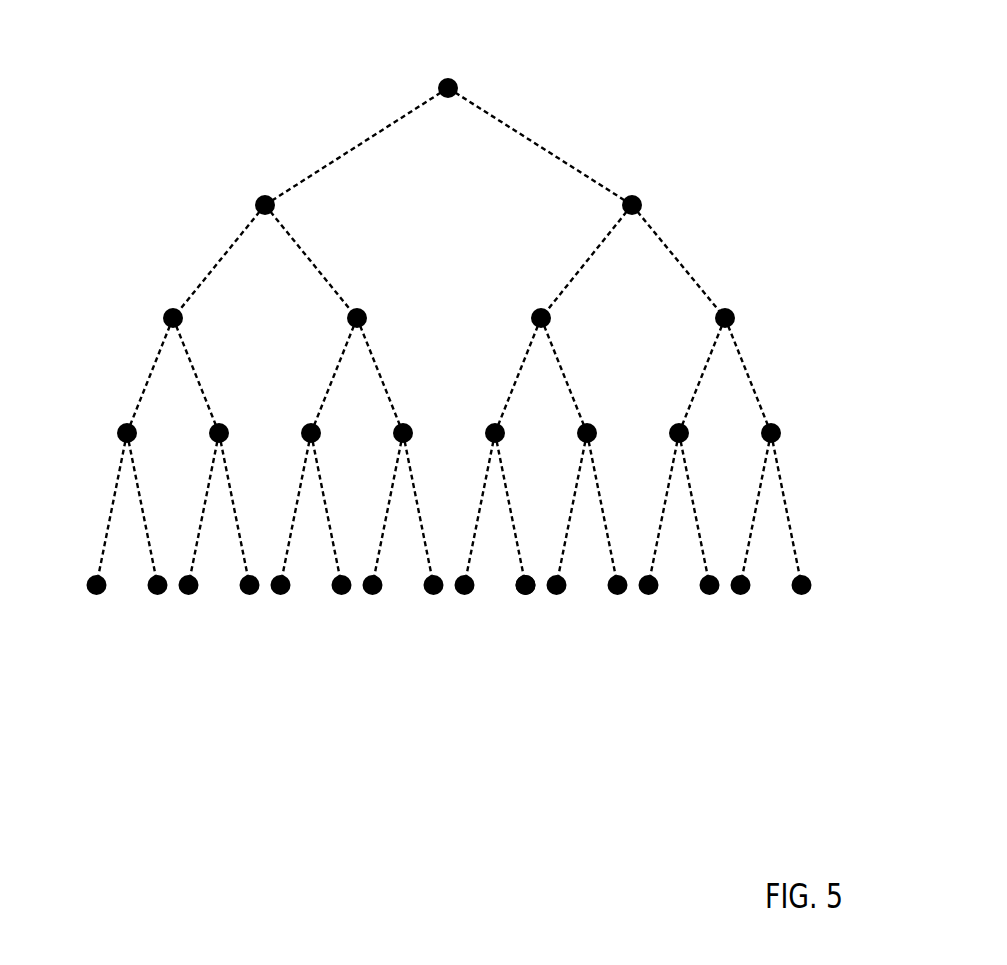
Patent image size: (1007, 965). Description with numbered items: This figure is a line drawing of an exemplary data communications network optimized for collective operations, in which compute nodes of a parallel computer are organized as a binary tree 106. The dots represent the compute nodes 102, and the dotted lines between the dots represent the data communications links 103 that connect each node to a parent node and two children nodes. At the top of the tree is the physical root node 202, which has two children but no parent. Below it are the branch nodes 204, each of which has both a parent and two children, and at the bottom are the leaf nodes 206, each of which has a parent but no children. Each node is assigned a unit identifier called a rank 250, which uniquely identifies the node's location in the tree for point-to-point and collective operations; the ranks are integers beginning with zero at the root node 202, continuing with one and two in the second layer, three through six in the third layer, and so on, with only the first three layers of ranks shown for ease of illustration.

The data communications network optimized for collective operations 106 is at (485, 431).
The compute nodes 102 is at (523, 592).
The data communications links 103 is at (218, 262).
The physical root node 202 is at (465, 80).
The branch nodes 204 is at (823, 152).
The leaf nodes 206 is at (823, 625).
The rank 250 is at (449, 204).